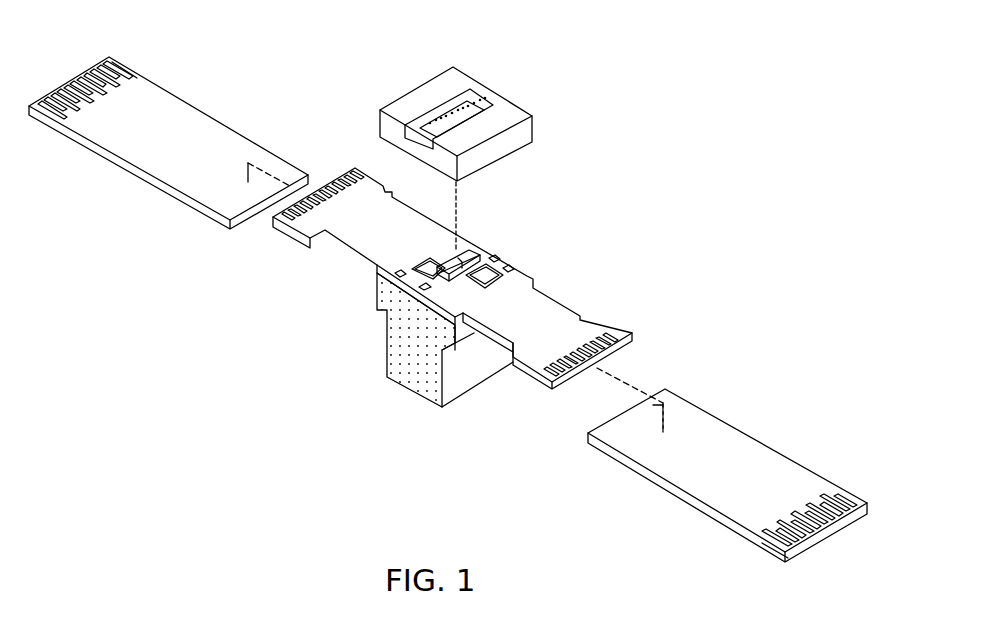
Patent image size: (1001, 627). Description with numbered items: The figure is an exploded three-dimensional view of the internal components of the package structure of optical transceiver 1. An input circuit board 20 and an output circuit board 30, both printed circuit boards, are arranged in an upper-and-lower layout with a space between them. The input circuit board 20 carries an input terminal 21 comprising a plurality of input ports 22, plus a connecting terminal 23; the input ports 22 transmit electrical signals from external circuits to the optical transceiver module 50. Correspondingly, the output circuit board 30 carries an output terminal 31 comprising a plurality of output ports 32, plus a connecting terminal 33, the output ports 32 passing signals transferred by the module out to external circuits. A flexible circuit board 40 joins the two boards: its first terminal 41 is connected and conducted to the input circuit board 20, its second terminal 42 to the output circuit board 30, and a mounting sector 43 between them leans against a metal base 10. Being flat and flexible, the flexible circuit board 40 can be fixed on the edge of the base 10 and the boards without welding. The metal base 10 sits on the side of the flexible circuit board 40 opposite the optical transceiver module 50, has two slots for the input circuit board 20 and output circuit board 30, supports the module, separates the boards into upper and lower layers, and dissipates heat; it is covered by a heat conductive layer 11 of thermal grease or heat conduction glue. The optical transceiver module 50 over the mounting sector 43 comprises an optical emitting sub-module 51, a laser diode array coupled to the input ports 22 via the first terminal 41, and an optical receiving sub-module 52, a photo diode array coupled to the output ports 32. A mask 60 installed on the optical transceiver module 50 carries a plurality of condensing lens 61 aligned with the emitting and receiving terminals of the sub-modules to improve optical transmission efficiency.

The package structure of optical transceiver 1 is at (634, 75).
The metal base 10 is at (419, 383).
The heat conductive layer 11 is at (392, 369).
The input circuit board 20 is at (207, 153).
The input terminal 21 is at (38, 101).
The input ports 22 is at (137, 80).
The connecting terminal 23 is at (248, 182).
The output circuit board 30 is at (713, 457).
The output terminal 31 is at (828, 535).
The output ports 32 is at (762, 544).
The connecting terminal 33 is at (665, 432).
The flexible circuit board 40 is at (590, 306).
The first terminal 41 is at (531, 387).
The second terminal 42 is at (281, 234).
The mounting sector 43 is at (407, 282).
The optical transceiver module 50 is at (463, 260).
The optical emitting sub-module 51 is at (451, 281).
The optical receiving sub-module 52 is at (462, 258).
The mask 60 is at (465, 115).
The condensing lens 61 is at (430, 120).